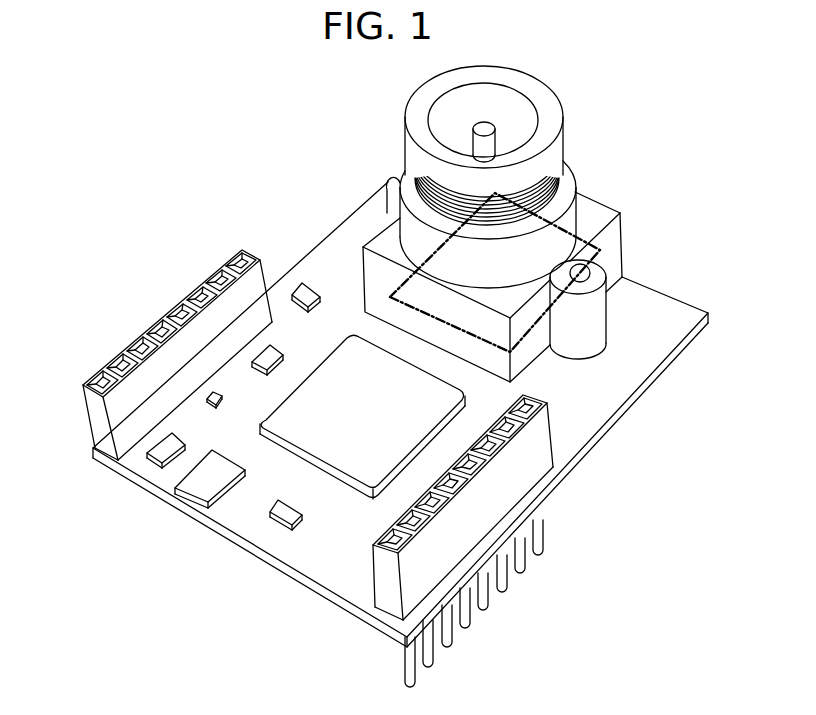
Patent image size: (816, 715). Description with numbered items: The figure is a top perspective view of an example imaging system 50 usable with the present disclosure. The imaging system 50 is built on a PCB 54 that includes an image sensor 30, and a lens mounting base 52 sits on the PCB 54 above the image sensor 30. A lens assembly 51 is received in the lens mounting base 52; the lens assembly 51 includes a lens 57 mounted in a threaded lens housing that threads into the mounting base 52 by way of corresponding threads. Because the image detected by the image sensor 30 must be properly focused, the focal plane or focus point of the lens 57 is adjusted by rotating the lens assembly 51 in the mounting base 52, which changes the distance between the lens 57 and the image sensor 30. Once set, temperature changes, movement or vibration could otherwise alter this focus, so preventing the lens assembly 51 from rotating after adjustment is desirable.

The image sensor 30 is at (518, 328).
The imaging system 50 is at (576, 592).
The lens assembly 51 is at (408, 138).
The lens mounting base 52 is at (603, 212).
The PCB 54 is at (303, 258).
The lens 57 is at (510, 102).